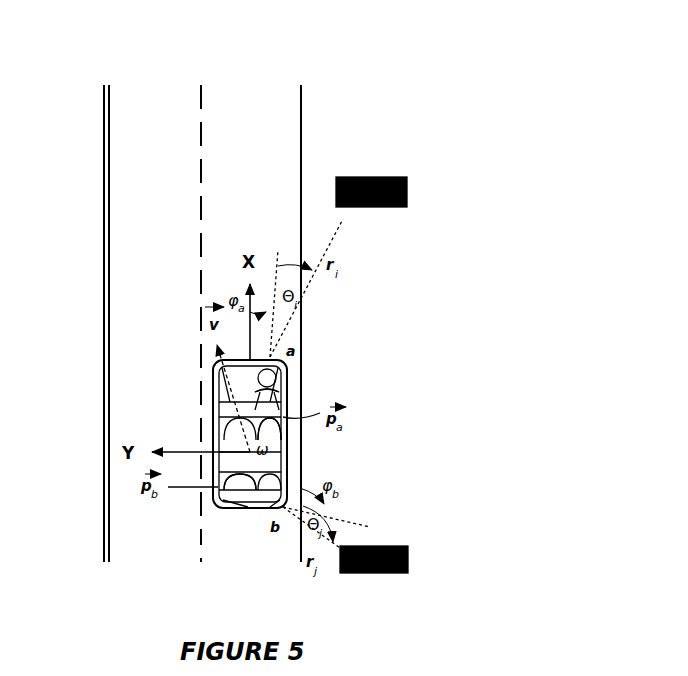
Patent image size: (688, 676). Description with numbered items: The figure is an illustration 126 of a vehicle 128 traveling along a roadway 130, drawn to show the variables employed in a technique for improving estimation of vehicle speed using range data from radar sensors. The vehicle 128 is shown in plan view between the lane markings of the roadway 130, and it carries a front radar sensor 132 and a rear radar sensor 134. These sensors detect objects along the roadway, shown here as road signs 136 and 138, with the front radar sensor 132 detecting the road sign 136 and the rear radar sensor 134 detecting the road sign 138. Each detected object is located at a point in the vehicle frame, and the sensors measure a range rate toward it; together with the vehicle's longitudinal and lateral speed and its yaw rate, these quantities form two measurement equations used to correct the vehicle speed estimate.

The illustration 126 is at (375, 82).
The vehicle 128 is at (283, 470).
The roadway 130 is at (142, 513).
The front radar sensor 132 is at (283, 385).
The rear radar sensor 134 is at (248, 507).
The road sign 136 is at (395, 207).
The road sign 138 is at (388, 573).